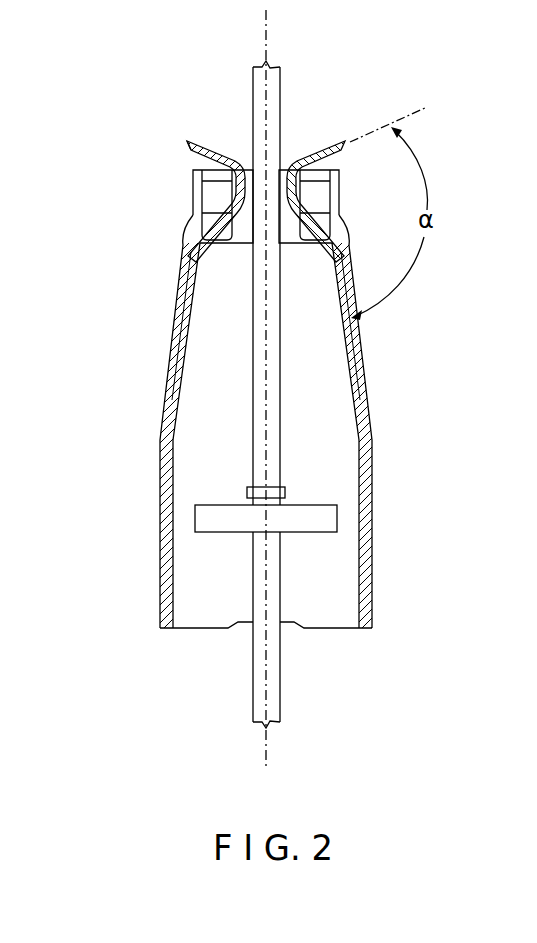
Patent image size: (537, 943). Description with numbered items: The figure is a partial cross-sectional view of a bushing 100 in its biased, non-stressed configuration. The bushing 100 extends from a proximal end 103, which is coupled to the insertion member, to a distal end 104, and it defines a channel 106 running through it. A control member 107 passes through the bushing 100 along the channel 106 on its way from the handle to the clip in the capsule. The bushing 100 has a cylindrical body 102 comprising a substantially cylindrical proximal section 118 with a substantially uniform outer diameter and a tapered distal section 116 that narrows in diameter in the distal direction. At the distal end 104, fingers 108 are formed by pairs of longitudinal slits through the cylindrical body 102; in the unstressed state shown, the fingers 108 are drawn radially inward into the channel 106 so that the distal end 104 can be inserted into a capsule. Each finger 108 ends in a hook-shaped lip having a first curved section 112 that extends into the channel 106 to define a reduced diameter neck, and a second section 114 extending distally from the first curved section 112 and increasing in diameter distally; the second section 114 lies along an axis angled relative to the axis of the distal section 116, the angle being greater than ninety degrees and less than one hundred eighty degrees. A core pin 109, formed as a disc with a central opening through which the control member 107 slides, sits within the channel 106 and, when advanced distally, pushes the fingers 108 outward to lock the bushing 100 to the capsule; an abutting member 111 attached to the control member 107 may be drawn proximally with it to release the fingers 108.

The bushing 100 is at (399, 622).
The cylindrical body 102 is at (361, 403).
The proximal end 103 is at (163, 630).
The distal end 104 is at (186, 148).
The channel 106 is at (222, 378).
The control member 107 is at (252, 690).
The fingers 108 is at (192, 140).
The core pin 109 is at (338, 520).
The abutting member 111 is at (286, 492).
The first curved section 112 is at (205, 181).
The second section 114 is at (344, 139).
The distal section 116 is at (177, 343).
The proximal section 118 is at (166, 542).